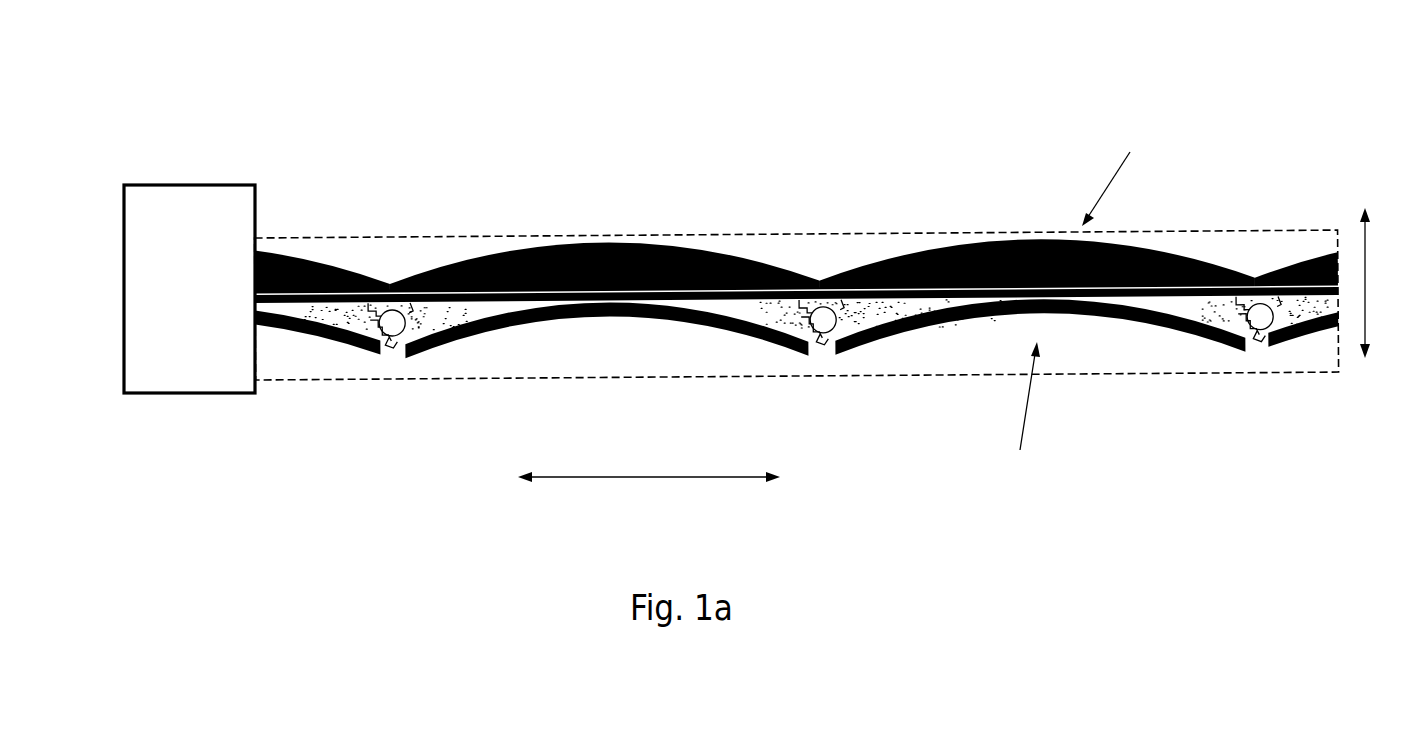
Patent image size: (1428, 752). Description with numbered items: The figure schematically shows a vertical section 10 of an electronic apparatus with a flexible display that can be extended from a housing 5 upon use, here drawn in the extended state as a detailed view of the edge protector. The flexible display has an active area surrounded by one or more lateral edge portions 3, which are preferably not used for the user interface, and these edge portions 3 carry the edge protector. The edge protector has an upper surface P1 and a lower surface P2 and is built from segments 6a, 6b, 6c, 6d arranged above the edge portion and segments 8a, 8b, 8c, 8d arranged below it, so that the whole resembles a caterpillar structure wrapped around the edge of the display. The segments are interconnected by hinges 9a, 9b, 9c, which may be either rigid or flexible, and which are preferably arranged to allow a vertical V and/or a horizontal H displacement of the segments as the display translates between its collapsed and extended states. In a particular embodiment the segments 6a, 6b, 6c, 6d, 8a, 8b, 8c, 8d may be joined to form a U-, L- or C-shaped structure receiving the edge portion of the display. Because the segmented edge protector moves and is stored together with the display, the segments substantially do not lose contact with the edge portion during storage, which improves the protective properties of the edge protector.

The vertical section 10 is at (797, 226).
The housing 5 is at (190, 395).
The lateral edge portion 3 is at (710, 232).
The segment 6a is at (288, 258).
The segment 6b is at (526, 246).
The segment 6c is at (956, 246).
The segment 6d is at (1310, 258).
The segment 8a is at (332, 346).
The segment 8b is at (668, 323).
The segment 8c is at (1140, 325).
The segment 8d is at (1272, 352).
The hinge 9a is at (387, 337).
The hinge 9b is at (823, 330).
The hinge 9c is at (1258, 328).
The upper surface P1 is at (1126, 172).
The lower surface P2 is at (1014, 414).
The vertical displacement V is at (1367, 282).
The horizontal displacement H is at (615, 477).